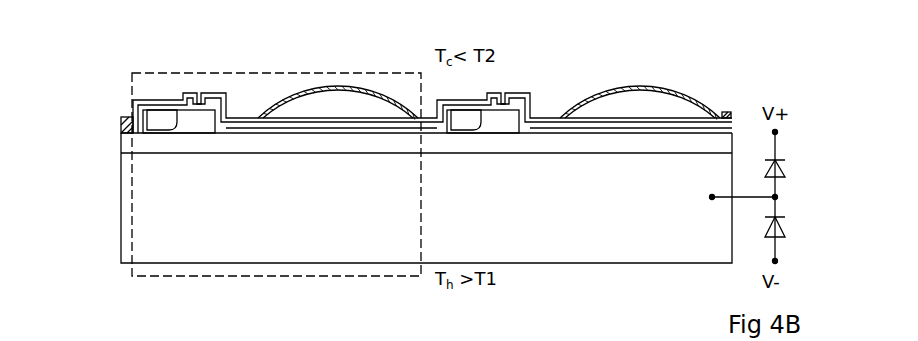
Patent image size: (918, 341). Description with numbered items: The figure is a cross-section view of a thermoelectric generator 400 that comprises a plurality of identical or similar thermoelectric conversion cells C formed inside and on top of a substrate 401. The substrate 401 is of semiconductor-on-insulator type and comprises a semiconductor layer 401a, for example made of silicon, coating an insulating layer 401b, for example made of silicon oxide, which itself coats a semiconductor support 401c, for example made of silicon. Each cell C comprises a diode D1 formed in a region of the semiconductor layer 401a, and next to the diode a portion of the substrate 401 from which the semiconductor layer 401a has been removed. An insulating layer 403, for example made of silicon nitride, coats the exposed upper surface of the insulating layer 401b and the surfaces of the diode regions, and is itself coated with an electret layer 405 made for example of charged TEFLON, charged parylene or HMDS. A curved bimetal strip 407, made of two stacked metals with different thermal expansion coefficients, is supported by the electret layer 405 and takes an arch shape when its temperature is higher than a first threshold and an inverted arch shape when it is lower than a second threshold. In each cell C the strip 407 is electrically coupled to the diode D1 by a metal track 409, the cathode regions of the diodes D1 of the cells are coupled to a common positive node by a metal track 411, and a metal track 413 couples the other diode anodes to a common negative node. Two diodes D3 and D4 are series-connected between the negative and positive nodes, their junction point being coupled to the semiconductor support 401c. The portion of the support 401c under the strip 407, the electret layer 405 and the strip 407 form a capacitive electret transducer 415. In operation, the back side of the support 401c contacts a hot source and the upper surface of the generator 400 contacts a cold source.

The thermoelectric generator 400 is at (104, 50).
The substrate 401 is at (66, 128).
The semiconductor layer 401a is at (130, 131).
The insulating layer 401b is at (128, 145).
The semiconductor support 401c is at (128, 176).
The insulating layer 403 is at (243, 133).
The electret layer 405 is at (276, 126).
The bimetal strip 407 is at (372, 92).
The metal track 409 is at (226, 104).
The metal track 411 is at (728, 112).
The metal track 413 is at (127, 117).
The capacitive electret transducer 415 is at (346, 83).
The thermoelectric conversion cell C is at (277, 73).
The diode D1 is at (173, 133).
The diode D3 is at (784, 170).
The diode D4 is at (785, 227).